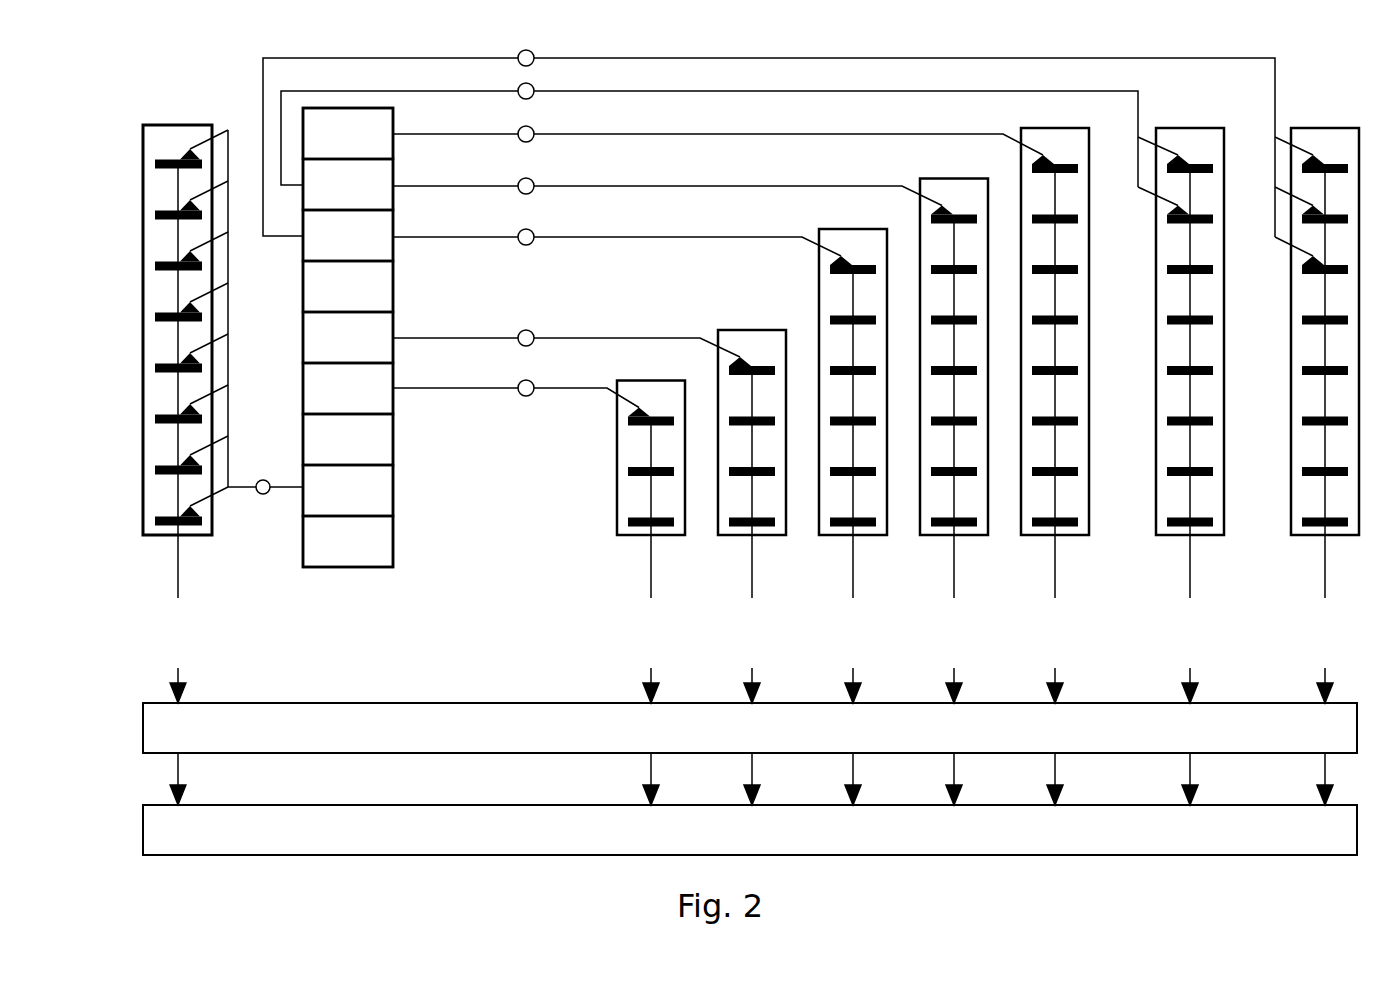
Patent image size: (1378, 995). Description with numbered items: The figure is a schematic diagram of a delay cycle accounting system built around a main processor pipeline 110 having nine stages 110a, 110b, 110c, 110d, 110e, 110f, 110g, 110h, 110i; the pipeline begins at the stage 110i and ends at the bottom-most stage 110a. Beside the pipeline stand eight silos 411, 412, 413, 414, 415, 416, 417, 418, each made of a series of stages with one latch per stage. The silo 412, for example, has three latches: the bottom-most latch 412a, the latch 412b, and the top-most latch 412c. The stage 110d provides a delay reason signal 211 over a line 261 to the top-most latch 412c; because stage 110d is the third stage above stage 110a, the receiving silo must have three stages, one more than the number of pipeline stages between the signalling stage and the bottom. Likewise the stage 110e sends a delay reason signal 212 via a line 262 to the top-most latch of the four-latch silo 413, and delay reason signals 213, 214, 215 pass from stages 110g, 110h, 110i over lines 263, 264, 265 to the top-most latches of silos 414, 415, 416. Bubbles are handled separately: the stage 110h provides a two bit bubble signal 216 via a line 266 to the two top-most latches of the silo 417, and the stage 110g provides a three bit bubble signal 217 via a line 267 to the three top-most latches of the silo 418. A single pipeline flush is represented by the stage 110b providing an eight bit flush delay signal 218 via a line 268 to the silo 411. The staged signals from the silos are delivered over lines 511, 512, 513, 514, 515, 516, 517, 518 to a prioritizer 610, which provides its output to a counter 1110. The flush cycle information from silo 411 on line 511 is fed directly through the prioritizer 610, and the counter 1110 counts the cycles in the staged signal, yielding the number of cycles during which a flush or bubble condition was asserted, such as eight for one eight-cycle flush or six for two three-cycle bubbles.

The main processor pipeline 110 is at (382, 377).
The pipeline stage 110a is at (348, 541).
The pipeline stage 110b is at (348, 490).
The pipeline stage 110c is at (348, 439).
The pipeline stage 110d is at (348, 388).
The pipeline stage 110e is at (348, 337).
The pipeline stage 110f is at (348, 286).
The pipeline stage 110g is at (348, 235).
The pipeline stage 110h is at (348, 184).
The pipeline stage 110i is at (348, 133).
The delay reason signal 211 is at (531, 383).
The delay reason signal 212 is at (531, 333).
The delay reason signal 213 is at (531, 232).
The delay reason signal 214 is at (531, 181).
The delay reason signal 215 is at (531, 129).
The two bit bubble signal 216 is at (531, 86).
The three bit bubble signal 217 is at (531, 53).
The eight bit flush delay signal 218 is at (297, 543).
The line 261 is at (455, 373).
The line 262 is at (455, 323).
The line 263 is at (455, 222).
The line 264 is at (455, 171).
The line 265 is at (455, 119).
The line 266 is at (399, 123).
The line 267 is at (390, 132).
The line 268 is at (283, 559).
The silo 411 is at (237, 465).
The silo 412 is at (603, 513).
The latch 412a is at (598, 540).
The latch 412b is at (598, 489).
The latch 412c is at (598, 439).
The silo 413 is at (727, 487).
The silo 414 is at (828, 437).
The silo 415 is at (929, 412).
The silo 416 is at (1030, 386).
The silo 417 is at (1163, 386).
The silo 418 is at (1299, 386).
The line 511 is at (183, 678).
The line 512 is at (647, 678).
The line 513 is at (748, 678).
The line 514 is at (849, 678).
The line 515 is at (950, 678).
The line 516 is at (1051, 678).
The line 517 is at (1186, 678).
The line 518 is at (1321, 678).
The prioritizer 610 is at (750, 712).
The counter 1110 is at (750, 814).